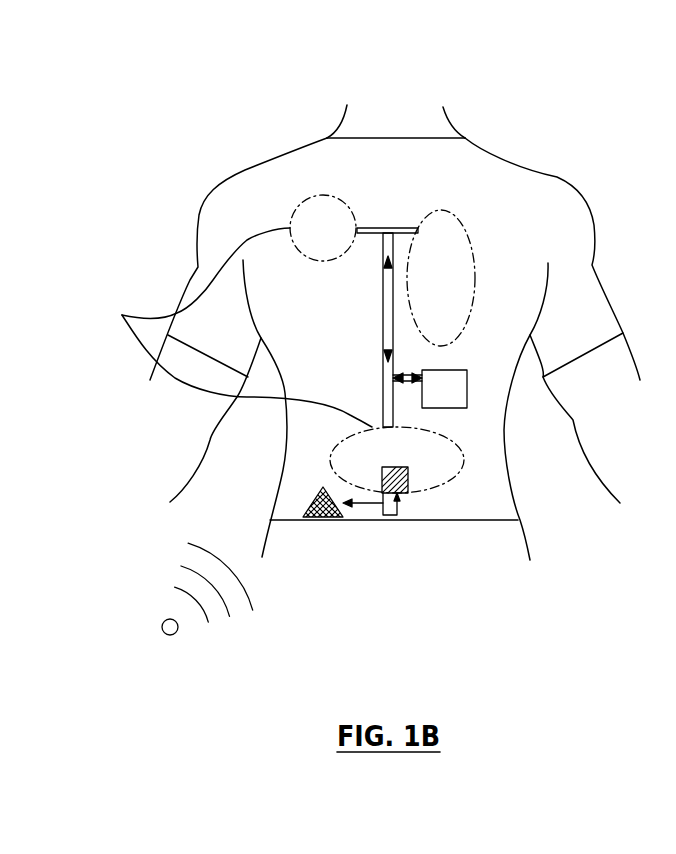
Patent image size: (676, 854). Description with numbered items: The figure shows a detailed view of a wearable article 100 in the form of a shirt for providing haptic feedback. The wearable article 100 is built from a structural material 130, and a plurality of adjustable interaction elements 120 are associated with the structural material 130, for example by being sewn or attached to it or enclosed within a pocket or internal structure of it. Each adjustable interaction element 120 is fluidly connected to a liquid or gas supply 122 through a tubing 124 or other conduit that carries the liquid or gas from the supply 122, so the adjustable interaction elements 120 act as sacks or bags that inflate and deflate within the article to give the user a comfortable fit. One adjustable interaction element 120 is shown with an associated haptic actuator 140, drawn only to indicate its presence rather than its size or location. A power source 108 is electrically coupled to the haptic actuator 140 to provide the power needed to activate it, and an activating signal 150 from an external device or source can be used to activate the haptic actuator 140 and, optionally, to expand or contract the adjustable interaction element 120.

The wearable article 100 is at (238, 148).
The structural material 130 is at (232, 207).
The adjustable interaction element 120 is at (227, 327).
The tubing 124 is at (400, 372).
The liquid or gas supply 122 is at (466, 410).
The haptic actuator 140 is at (410, 483).
The power source 108 is at (320, 517).
The activating signal 150 is at (176, 633).